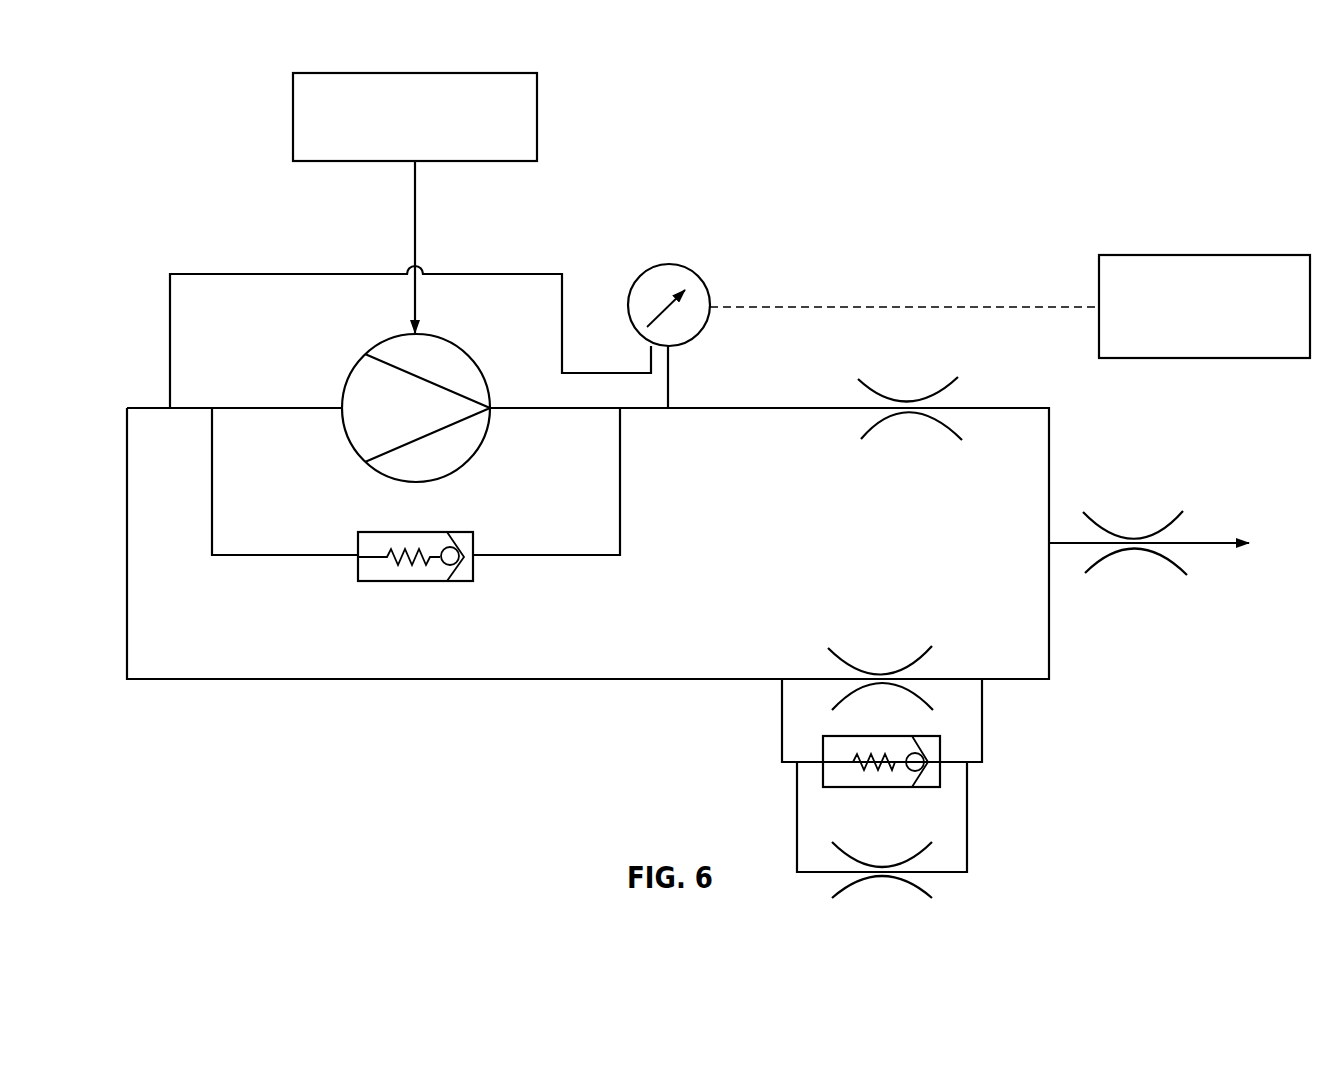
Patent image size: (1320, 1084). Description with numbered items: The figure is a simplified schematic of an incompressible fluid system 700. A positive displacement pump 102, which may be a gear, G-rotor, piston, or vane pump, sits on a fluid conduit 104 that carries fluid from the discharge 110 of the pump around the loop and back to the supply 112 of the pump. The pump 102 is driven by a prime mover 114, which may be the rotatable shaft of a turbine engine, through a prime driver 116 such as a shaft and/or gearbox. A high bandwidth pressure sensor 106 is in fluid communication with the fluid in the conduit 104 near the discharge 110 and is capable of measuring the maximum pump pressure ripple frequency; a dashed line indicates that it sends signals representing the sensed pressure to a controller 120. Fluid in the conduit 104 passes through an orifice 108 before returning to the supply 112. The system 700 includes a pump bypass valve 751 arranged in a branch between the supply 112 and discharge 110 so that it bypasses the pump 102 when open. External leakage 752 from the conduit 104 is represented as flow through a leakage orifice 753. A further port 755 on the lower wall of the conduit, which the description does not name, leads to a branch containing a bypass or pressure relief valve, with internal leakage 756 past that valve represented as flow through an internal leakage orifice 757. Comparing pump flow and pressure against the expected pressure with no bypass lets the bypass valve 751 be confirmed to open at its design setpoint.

The incompressible fluid system 700 is at (188, 720).
The fluid conduit 104 is at (1005, 680).
The positive displacement pump 102 is at (365, 353).
The supply 112 is at (322, 412).
The discharge 110 is at (500, 418).
The prime mover 114 is at (362, 73).
The prime driver 116 is at (417, 248).
The pressure sensor 106 is at (707, 287).
The controller 120 is at (1168, 253).
The orifice 108 is at (938, 375).
The leakage orifice 753 is at (1142, 507).
The external leakage 752 is at (1310, 555).
The pump bypass valve 751 is at (407, 582).
The lower port 755 is at (897, 642).
The internal leakage 756 is at (969, 820).
The internal leakage orifice 757 is at (883, 891).